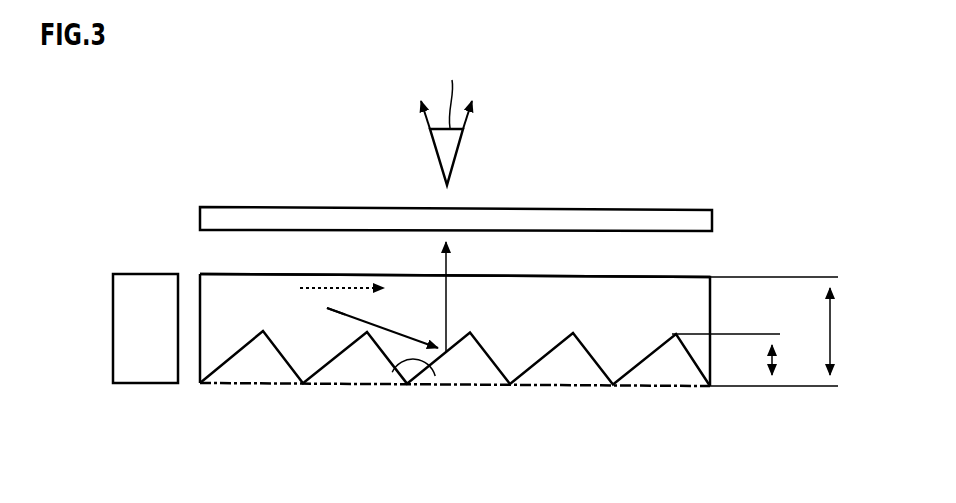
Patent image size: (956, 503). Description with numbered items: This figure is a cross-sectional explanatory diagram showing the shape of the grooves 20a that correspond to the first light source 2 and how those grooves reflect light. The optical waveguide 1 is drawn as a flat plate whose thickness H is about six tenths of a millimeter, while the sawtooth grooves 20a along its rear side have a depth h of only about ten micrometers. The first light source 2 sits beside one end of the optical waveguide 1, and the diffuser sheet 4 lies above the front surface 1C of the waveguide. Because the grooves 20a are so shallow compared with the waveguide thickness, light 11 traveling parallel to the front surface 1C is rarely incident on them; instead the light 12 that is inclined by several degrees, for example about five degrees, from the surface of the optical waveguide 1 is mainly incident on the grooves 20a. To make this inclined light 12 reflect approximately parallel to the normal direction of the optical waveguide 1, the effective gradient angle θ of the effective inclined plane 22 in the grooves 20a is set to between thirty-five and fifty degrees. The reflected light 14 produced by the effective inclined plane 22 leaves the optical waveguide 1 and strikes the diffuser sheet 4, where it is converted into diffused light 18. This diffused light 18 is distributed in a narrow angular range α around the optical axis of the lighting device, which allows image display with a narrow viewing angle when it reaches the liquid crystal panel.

The optical waveguide 1 is at (637, 364).
The front surface 1C is at (684, 277).
The first light source 2 is at (139, 273).
The diffuser sheet 4 is at (668, 209).
The light 11 is at (370, 293).
The inclined light 12 is at (345, 315).
The reflected light 14 is at (450, 308).
The diffused light 18 is at (458, 160).
The grooves 20a is at (458, 398).
The effective inclined plane 22 is at (392, 368).